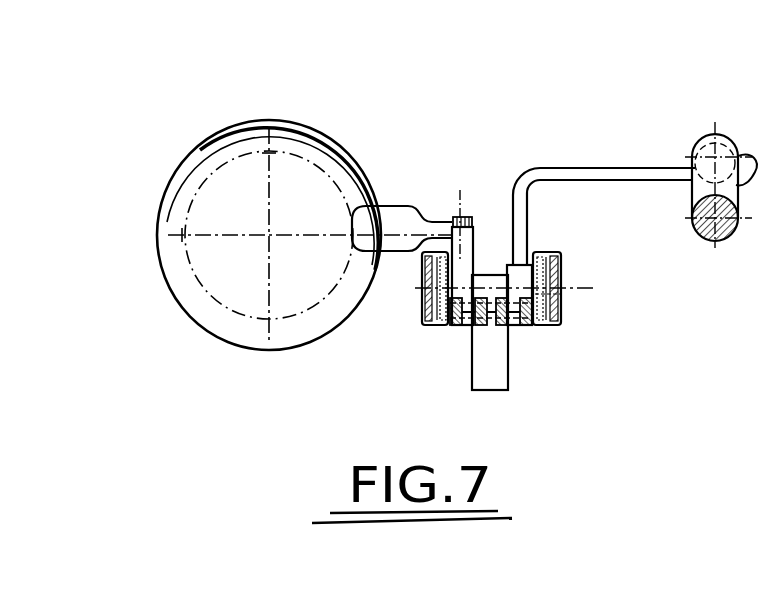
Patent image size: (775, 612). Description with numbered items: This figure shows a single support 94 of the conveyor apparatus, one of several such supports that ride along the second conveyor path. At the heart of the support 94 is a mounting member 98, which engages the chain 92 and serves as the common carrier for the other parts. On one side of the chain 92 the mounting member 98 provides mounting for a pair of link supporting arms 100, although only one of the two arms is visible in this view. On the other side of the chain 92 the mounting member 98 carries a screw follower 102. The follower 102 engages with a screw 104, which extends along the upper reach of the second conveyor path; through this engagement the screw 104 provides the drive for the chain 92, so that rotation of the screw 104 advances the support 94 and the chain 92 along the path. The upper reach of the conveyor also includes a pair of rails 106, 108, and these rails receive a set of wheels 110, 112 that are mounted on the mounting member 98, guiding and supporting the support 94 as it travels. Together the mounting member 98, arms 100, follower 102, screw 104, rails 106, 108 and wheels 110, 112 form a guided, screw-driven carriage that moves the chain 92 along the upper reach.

The chain 92 is at (488, 328).
The support 94 is at (535, 124).
The mounting member 98 is at (515, 335).
The link supporting arms 100 is at (558, 172).
The screw follower 102 is at (403, 205).
The screw 104 is at (300, 122).
The rail 106 is at (428, 327).
The rail 108 is at (558, 325).
The wheel 110 is at (423, 307).
The wheel 112 is at (560, 300).